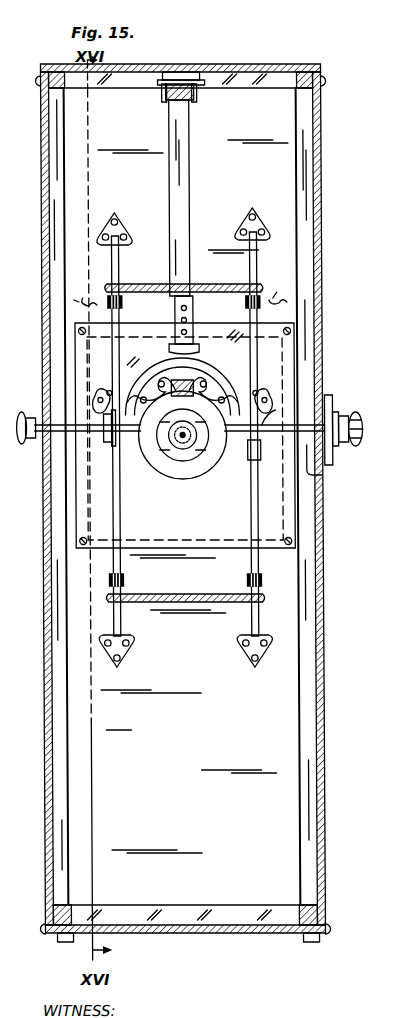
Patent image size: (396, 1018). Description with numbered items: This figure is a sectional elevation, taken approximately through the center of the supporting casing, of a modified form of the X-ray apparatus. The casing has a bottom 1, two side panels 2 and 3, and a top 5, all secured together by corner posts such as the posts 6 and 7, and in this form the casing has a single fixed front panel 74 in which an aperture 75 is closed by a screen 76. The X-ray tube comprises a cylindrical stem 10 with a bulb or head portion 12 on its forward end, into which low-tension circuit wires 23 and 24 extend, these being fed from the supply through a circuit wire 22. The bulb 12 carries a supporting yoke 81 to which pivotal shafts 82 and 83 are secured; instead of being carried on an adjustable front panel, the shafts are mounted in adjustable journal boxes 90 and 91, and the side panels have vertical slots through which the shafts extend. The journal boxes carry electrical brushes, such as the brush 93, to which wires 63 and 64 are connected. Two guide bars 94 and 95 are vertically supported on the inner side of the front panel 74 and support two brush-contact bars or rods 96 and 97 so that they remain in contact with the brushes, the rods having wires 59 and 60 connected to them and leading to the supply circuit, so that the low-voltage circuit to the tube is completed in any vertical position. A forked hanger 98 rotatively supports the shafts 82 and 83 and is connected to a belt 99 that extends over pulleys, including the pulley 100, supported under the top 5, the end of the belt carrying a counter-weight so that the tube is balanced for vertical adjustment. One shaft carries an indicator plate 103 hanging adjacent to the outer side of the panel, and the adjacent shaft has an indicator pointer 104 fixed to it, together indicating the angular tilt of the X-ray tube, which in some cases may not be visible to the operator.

The bottom 1 is at (200, 930).
The side panel 2 is at (323, 700).
The side panel 3 is at (43, 700).
The top 5 is at (60, 64).
The corner post 6 is at (316, 755).
The corner post 7 is at (60, 805).
The cylindrical stem 10 is at (165, 452).
The bulb or head portion 12 is at (183, 461).
The circuit wire 22 is at (50, 450).
The low-tension circuit wire 23 is at (200, 380).
The low-tension circuit wire 24 is at (160, 380).
The circuit wire 59 is at (82, 298).
The circuit wire 60 is at (278, 292).
The circuit wire 63 is at (96, 395).
The circuit wire 64 is at (270, 400).
The front panel 74 is at (280, 150).
The aperture 75 is at (296, 352).
The screen 76 is at (285, 488).
The supporting yoke 81 is at (202, 462).
The pivotal shaft 82 is at (40, 440).
The pivotal shaft 83 is at (322, 475).
The adjustable journal box 90 is at (108, 445).
The adjustable journal box 91 is at (260, 455).
The electrical brush 93 is at (272, 420).
The guide bar 94 is at (124, 574).
The guide bar 95 is at (246, 568).
The brush-contact bar or rod 96 is at (120, 520).
The brush-contact bar or rod 97 is at (258, 520).
The forked hanger 98 is at (170, 348).
The belt 99 is at (171, 172).
The pulley 100 is at (198, 100).
The indicator plate 103 is at (334, 402).
The indicator pointer 104 is at (333, 450).